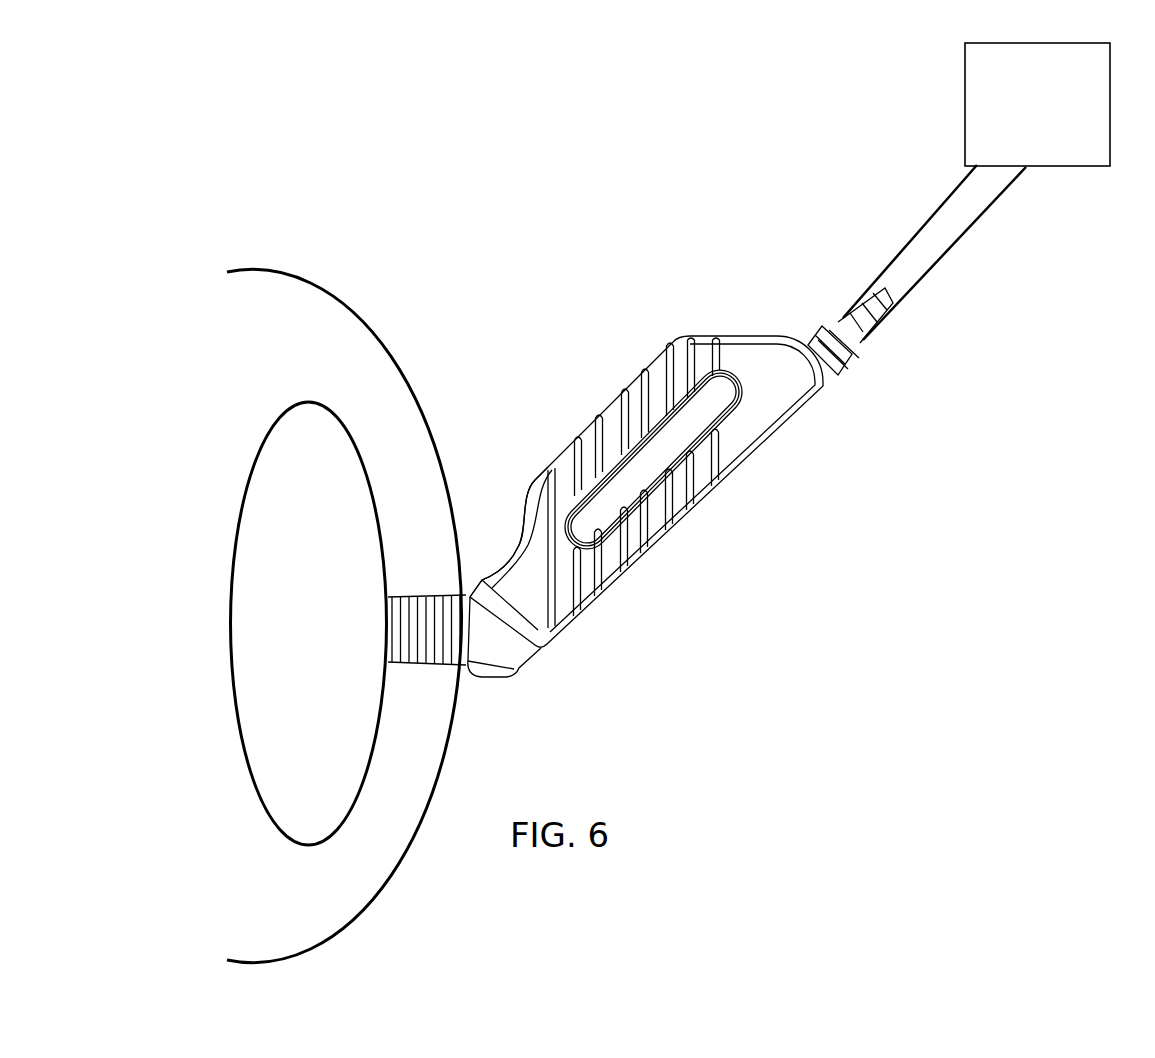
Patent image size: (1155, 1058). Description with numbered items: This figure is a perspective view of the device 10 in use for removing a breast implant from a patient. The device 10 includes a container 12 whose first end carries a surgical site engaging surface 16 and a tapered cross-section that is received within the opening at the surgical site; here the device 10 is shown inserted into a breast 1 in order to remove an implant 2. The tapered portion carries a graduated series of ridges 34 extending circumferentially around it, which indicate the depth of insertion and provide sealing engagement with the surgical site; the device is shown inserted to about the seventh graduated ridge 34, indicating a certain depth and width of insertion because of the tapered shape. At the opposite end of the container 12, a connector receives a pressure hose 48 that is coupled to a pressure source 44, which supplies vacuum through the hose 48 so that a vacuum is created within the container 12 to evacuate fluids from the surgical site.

The breast 1 is at (310, 335).
The implant 2 is at (322, 778).
The device 10 is at (463, 300).
The container 12 is at (742, 438).
The surgical site engaging surface 16 is at (482, 553).
The graduated series of ridges 34 is at (420, 658).
The pressure source 44 is at (1037, 104).
The pressure hose 48 is at (928, 250).